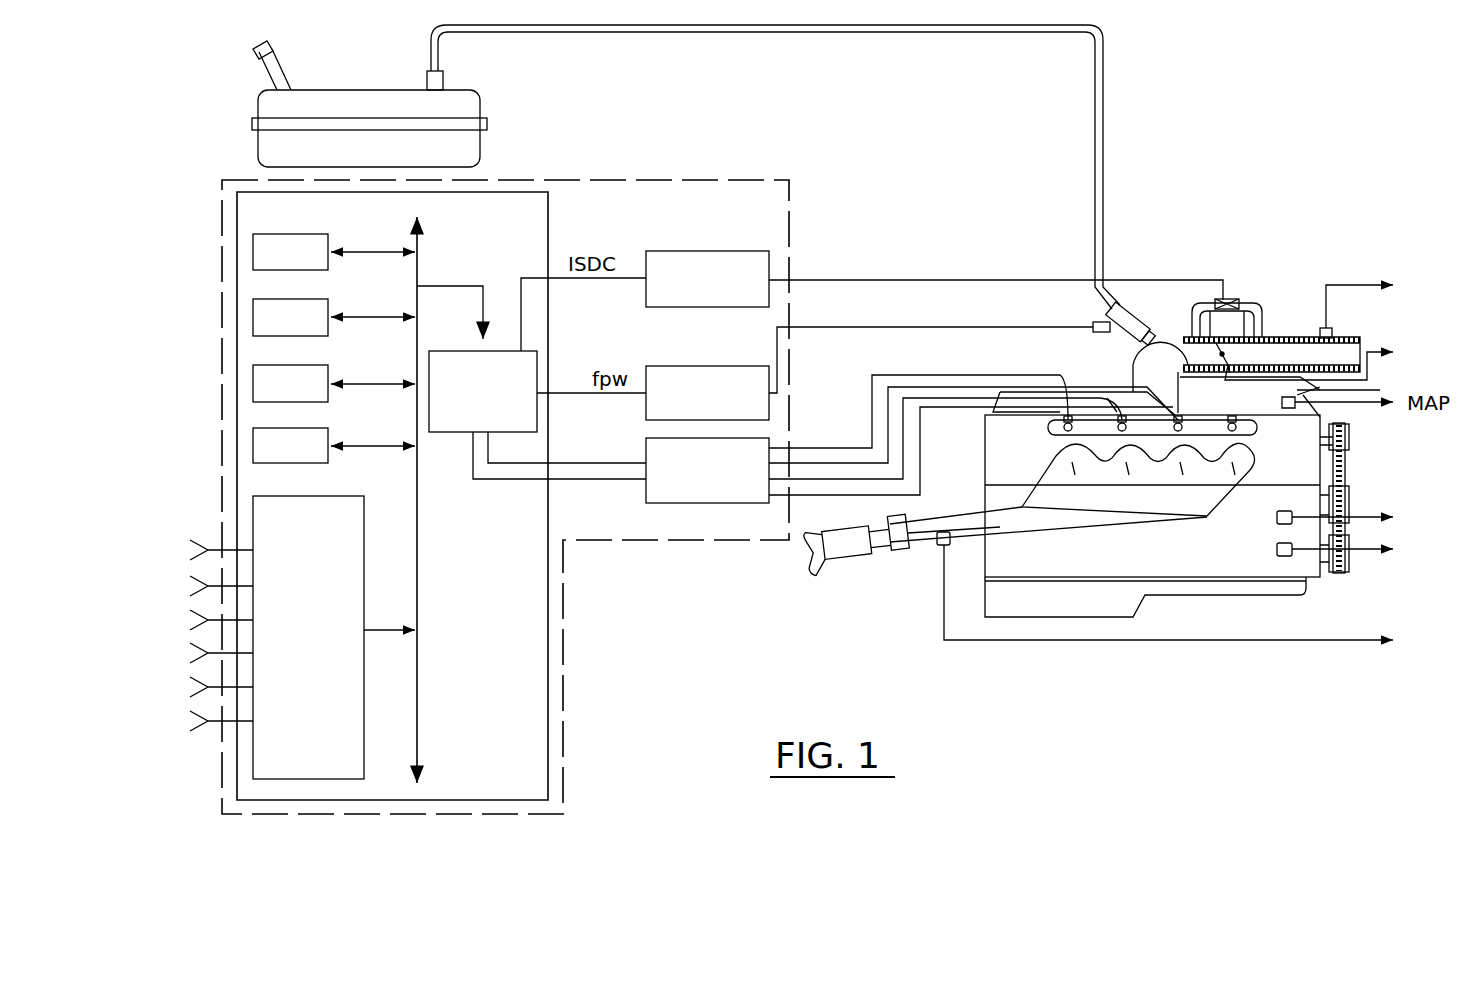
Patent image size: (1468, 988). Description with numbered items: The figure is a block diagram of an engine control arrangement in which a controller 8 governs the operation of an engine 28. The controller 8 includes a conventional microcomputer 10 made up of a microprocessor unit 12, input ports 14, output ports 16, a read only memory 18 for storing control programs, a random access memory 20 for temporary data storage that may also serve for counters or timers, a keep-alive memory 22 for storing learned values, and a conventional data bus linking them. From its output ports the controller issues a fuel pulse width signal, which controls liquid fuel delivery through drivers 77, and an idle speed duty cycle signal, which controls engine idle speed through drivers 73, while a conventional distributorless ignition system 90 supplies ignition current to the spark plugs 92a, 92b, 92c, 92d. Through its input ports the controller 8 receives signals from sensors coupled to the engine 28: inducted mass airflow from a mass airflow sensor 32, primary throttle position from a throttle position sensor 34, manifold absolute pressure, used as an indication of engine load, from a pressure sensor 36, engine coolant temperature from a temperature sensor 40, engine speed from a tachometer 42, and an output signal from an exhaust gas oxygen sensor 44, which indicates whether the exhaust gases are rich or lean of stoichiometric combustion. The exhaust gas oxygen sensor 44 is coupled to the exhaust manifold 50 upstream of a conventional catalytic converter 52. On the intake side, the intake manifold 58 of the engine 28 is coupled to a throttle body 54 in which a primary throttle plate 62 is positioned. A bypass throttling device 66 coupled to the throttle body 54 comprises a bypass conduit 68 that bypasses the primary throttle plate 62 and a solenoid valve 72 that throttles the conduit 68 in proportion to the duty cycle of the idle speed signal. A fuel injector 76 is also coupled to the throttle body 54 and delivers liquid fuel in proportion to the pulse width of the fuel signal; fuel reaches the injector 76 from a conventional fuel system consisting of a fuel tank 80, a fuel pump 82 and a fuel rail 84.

The controller 8 is at (660, 181).
The microcomputer 10 is at (237, 202).
The microprocessor unit 12 is at (253, 250).
The input ports 14 is at (366, 560).
The output ports 16 is at (458, 433).
The read only memory 18 is at (253, 313).
The random access memory 20 is at (253, 380).
The keep-alive memory 22 is at (253, 445).
The engine 28 is at (1372, 467).
The mass airflow sensor 32 is at (1330, 330).
The throttle position sensor 34 is at (1175, 340).
The pressure sensor 36 is at (1324, 367).
The temperature sensor 40 is at (1275, 517).
The tachometer 42 is at (1275, 548).
The exhaust gas oxygen sensor 44 is at (940, 546).
The exhaust manifold 50 is at (1110, 520).
The catalytic converter 52 is at (855, 558).
The throttle body 54 is at (1135, 335).
The intake manifold 58 is at (1000, 390).
The primary throttle plate 62 is at (1205, 335).
The bypass throttling device 66 is at (1260, 298).
The bypass conduit 68 is at (1255, 303).
The solenoid valve 72 is at (1232, 300).
The drivers 73 is at (710, 252).
The fuel injector 76 is at (1103, 312).
The drivers 77 is at (710, 366).
The fuel tank 80 is at (343, 88).
The fuel pump 82 is at (445, 78).
The fuel rail 84 is at (1103, 80).
The distributorless ignition system 90 is at (658, 503).
The spark plug 92a is at (1068, 420).
The spark plug 92b is at (1122, 420).
The spark plug 92c is at (1248, 452).
The spark plug 92d is at (1245, 428).